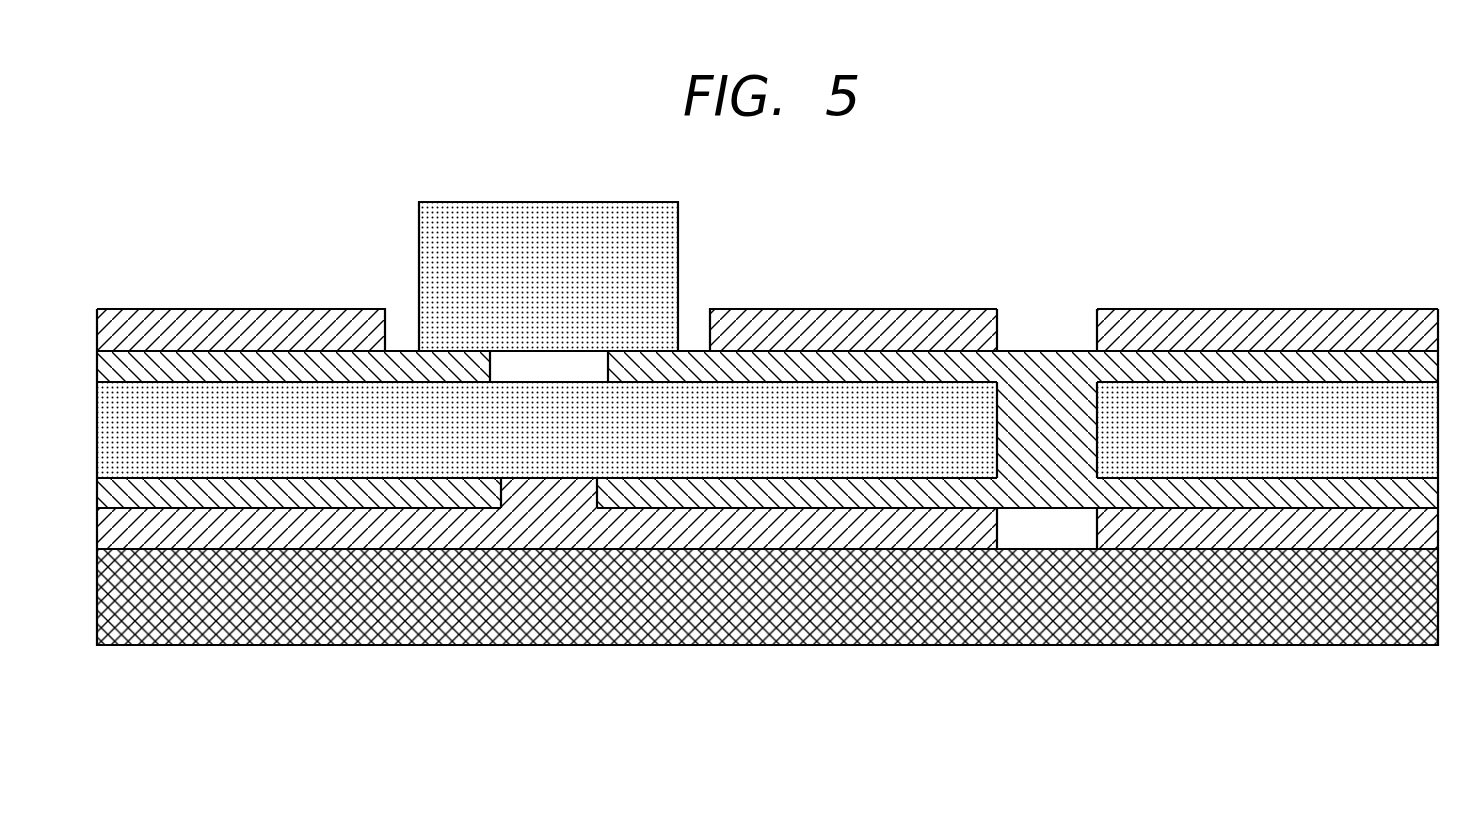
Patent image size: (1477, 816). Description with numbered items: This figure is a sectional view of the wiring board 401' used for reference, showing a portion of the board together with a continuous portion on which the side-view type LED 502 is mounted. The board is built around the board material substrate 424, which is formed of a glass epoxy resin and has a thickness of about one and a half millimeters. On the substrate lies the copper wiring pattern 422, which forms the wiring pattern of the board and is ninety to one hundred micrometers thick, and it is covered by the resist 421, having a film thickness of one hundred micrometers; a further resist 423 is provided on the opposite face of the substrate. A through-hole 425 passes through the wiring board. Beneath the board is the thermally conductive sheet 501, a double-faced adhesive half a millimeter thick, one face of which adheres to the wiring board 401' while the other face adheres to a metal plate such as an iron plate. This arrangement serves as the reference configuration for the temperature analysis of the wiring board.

The wiring board for reference 401' is at (767, 400).
The resist 421 is at (168, 327).
The copper wiring pattern 422 is at (302, 372).
The resist 423 is at (652, 530).
The board material substrate 424 is at (867, 458).
The through-hole 425 is at (1040, 310).
The thermally conductive sheet 501 is at (390, 648).
The side-view type LED 502 is at (547, 227).